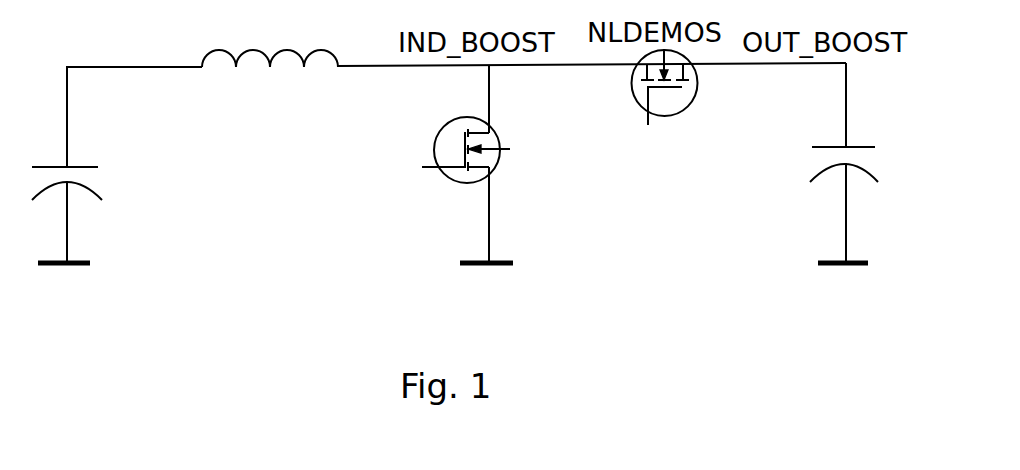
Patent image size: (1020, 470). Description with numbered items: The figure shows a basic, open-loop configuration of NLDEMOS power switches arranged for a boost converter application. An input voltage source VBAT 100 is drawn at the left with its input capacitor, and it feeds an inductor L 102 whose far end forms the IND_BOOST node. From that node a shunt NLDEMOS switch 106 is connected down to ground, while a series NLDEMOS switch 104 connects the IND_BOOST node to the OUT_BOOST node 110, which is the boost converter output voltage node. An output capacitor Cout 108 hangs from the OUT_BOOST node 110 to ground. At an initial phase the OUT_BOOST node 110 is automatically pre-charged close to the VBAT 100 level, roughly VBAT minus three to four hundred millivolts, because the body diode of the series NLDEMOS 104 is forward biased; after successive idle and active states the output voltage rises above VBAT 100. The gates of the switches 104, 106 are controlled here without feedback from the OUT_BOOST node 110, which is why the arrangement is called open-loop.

The input voltage (VBAT) 100 is at (78, 167).
The inductor L 102 is at (313, 44).
The series NLDEMOS switch transistor 104 is at (698, 82).
The NLDEMOS switch 106 is at (500, 160).
The output capacitor Cout 108 is at (853, 147).
The OUT_BOOST node 110 is at (847, 67).